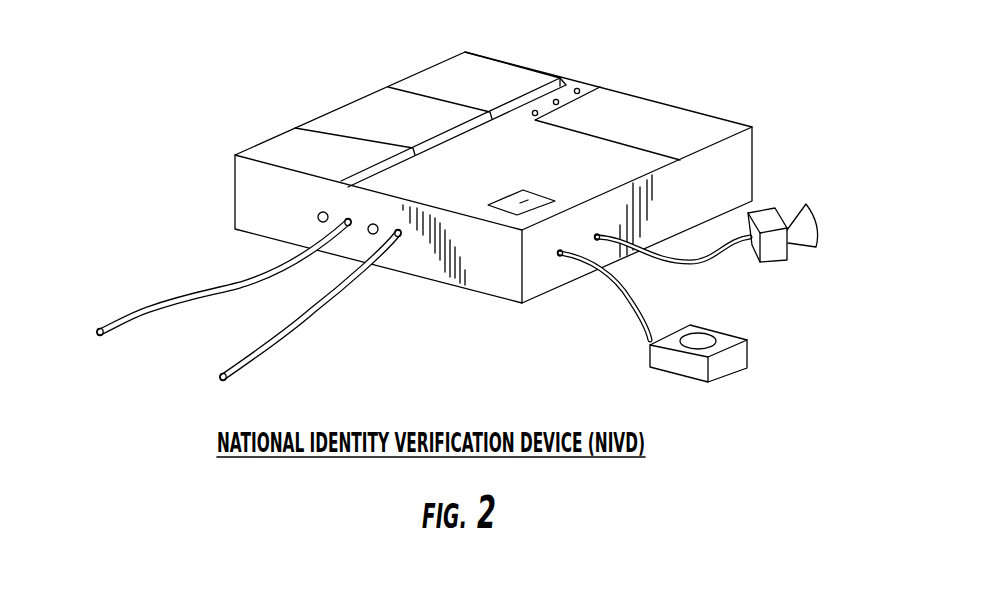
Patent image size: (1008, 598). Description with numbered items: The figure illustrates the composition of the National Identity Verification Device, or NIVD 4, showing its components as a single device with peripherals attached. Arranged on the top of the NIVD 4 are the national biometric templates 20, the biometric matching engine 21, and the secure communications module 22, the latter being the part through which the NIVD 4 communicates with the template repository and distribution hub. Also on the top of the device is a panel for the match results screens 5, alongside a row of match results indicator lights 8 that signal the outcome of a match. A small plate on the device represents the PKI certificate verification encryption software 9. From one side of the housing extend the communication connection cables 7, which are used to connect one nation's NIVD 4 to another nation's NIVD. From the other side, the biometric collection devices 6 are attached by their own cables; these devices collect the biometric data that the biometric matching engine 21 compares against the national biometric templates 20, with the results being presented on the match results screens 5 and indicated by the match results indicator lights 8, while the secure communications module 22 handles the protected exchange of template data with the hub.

The NIVD 4 is at (755, 158).
The match results screens 5 is at (663, 120).
The biometric collection devices 6 is at (737, 338).
The communication connection cables 7 is at (262, 357).
The match results indicator lights 8 is at (560, 87).
The PKI certificate verification encryption software 9 is at (520, 203).
The national biometric templates 20 is at (300, 150).
The biometric matching engine 21 is at (367, 117).
The secure communications module 22 is at (457, 73).